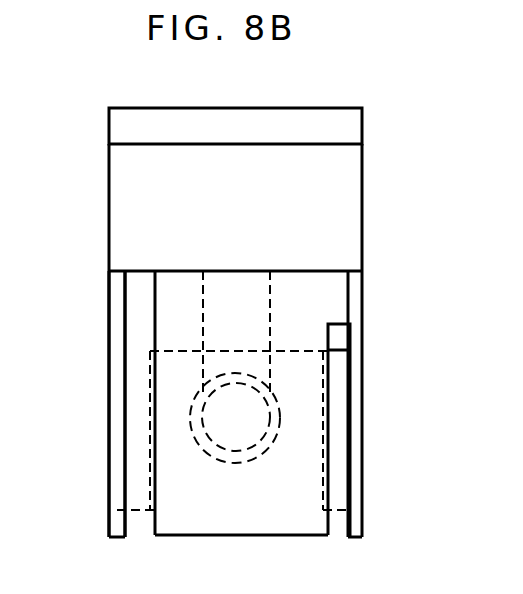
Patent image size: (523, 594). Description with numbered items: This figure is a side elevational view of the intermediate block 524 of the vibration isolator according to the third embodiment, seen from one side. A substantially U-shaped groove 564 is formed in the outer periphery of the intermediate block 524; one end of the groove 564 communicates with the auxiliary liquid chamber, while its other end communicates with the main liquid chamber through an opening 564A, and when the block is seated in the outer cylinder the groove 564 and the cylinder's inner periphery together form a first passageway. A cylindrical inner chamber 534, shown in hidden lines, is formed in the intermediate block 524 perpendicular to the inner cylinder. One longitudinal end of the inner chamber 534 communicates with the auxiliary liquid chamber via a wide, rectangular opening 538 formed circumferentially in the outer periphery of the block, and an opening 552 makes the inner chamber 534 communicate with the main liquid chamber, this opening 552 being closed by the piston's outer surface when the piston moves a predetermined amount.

The intermediate block 524 is at (315, 104).
The inner chamber 534 is at (200, 444).
The rectangular opening 538 is at (266, 296).
The opening 552 is at (208, 380).
The groove 564 is at (123, 343).
The opening 564A is at (346, 337).